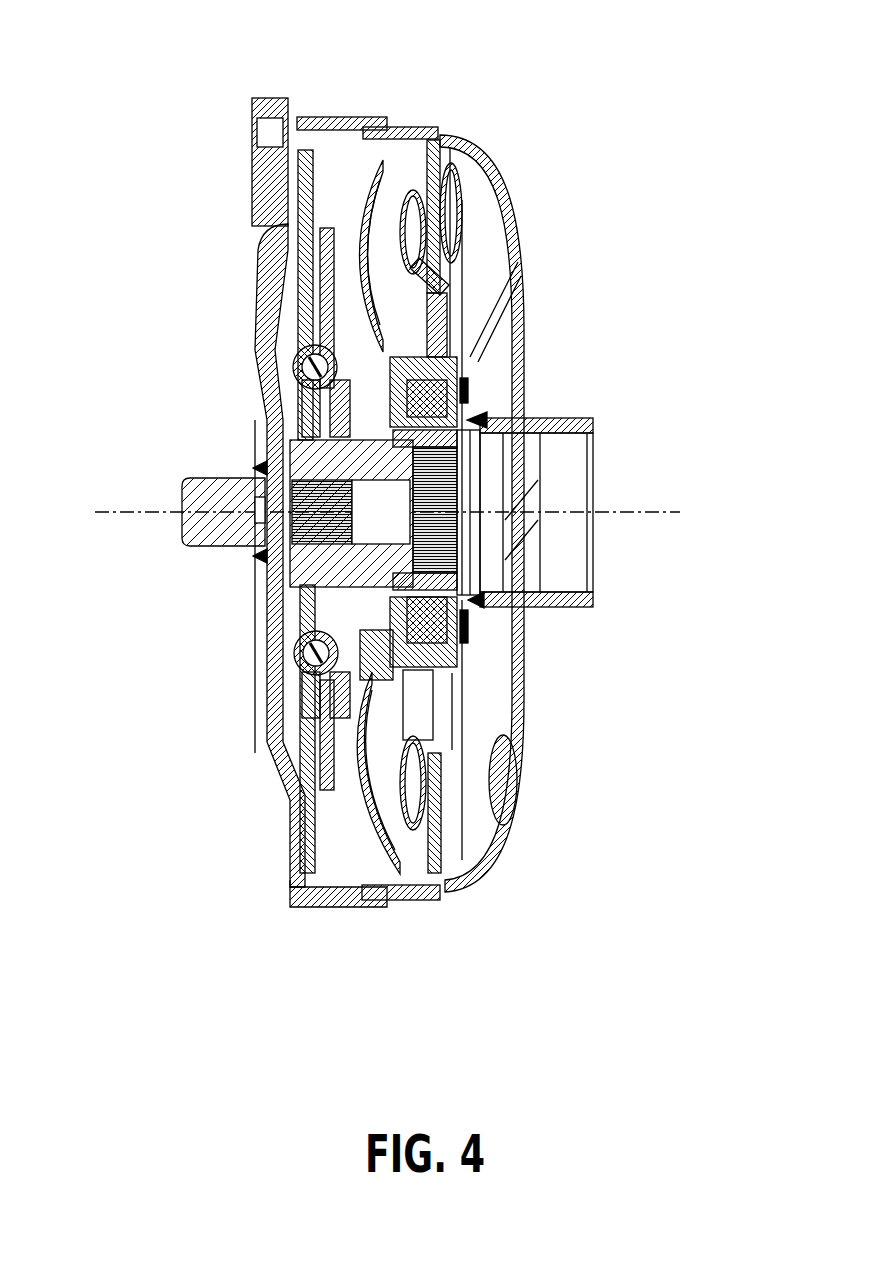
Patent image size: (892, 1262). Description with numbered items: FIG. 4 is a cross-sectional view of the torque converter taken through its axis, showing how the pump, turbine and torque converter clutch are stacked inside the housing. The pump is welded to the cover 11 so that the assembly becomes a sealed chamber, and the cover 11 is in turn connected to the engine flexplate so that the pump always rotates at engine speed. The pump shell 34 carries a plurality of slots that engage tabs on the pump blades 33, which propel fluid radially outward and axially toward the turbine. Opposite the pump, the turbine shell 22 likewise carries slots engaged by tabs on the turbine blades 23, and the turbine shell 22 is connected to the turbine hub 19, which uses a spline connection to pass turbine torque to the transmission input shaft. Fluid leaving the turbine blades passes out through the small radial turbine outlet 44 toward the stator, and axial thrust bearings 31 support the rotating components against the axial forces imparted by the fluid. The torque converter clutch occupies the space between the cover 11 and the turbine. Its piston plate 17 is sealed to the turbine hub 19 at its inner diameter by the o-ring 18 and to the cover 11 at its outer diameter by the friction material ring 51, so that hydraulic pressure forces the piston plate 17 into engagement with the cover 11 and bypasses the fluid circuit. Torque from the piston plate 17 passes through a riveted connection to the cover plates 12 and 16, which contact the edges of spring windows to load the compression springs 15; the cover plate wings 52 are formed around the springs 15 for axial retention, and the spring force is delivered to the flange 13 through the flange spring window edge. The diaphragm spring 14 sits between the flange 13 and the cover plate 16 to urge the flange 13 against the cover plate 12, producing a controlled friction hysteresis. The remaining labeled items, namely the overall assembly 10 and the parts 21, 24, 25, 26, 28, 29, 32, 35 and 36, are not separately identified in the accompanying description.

The clutch assembly 10 is at (525, 153).
The cover 11 is at (257, 281).
The cover plate 12 is at (318, 320).
The flange 13 is at (307, 723).
The diaphragm spring 14 is at (322, 405).
The compression springs 15 is at (300, 655).
The cover plate 16 is at (322, 330).
The piston plate 17 is at (313, 230).
The o-ring 18 is at (340, 583).
The turbine hub 19 is at (320, 557).
The lower nut 21 is at (390, 640).
The turbine shell 22 is at (373, 180).
The turbine blades 23 is at (393, 182).
The rods 24 is at (398, 185).
The bearing 25 is at (455, 360).
The seal bar 26 is at (463, 625).
The spline ring 28 is at (497, 587).
The retainer 29 is at (480, 405).
The axial thrust bearings 31 is at (470, 392).
The inner shell wall 32 is at (455, 195).
The pump blades 33 is at (478, 208).
The pump shell 34 is at (487, 163).
The cylinder flange 35 is at (573, 420).
The cylinder 36 is at (527, 463).
The turbine outlet 44 is at (398, 708).
The friction material ring 51 is at (297, 847).
The cover plate wings 52 is at (307, 742).